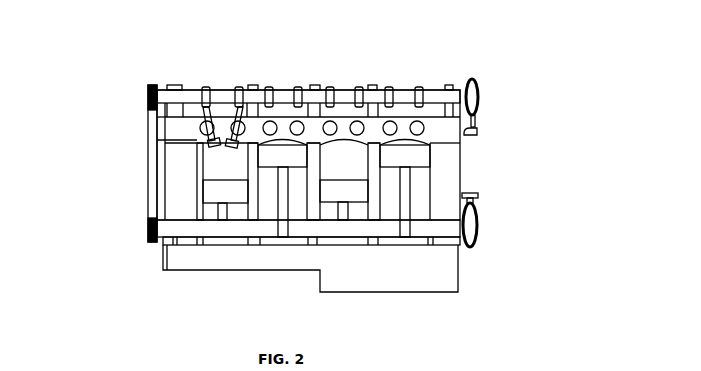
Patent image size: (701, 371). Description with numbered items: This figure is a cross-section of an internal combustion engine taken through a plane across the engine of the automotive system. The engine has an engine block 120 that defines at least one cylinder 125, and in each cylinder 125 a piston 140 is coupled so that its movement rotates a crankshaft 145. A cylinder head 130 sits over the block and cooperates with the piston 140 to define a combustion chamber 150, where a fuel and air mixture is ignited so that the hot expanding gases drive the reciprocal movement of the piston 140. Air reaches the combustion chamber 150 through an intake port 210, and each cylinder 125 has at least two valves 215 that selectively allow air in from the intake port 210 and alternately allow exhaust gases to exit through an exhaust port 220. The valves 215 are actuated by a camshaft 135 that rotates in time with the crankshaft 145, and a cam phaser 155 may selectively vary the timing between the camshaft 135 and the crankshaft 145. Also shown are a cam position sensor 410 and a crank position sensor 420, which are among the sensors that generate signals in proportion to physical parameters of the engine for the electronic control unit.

The engine block 120 is at (160, 182).
The cylinder 125 is at (322, 163).
The cylinder head 130 is at (160, 137).
The camshaft 135 is at (218, 88).
The piston 140 is at (347, 190).
The crankshaft 145 is at (192, 233).
The combustion chamber 150 is at (405, 143).
The cam phaser 155 is at (150, 100).
The intake port 210 is at (328, 118).
The valves 215 is at (206, 140).
The exhaust port 220 is at (291, 121).
The cam position sensor 410 is at (477, 133).
The crank position sensor 420 is at (477, 197).